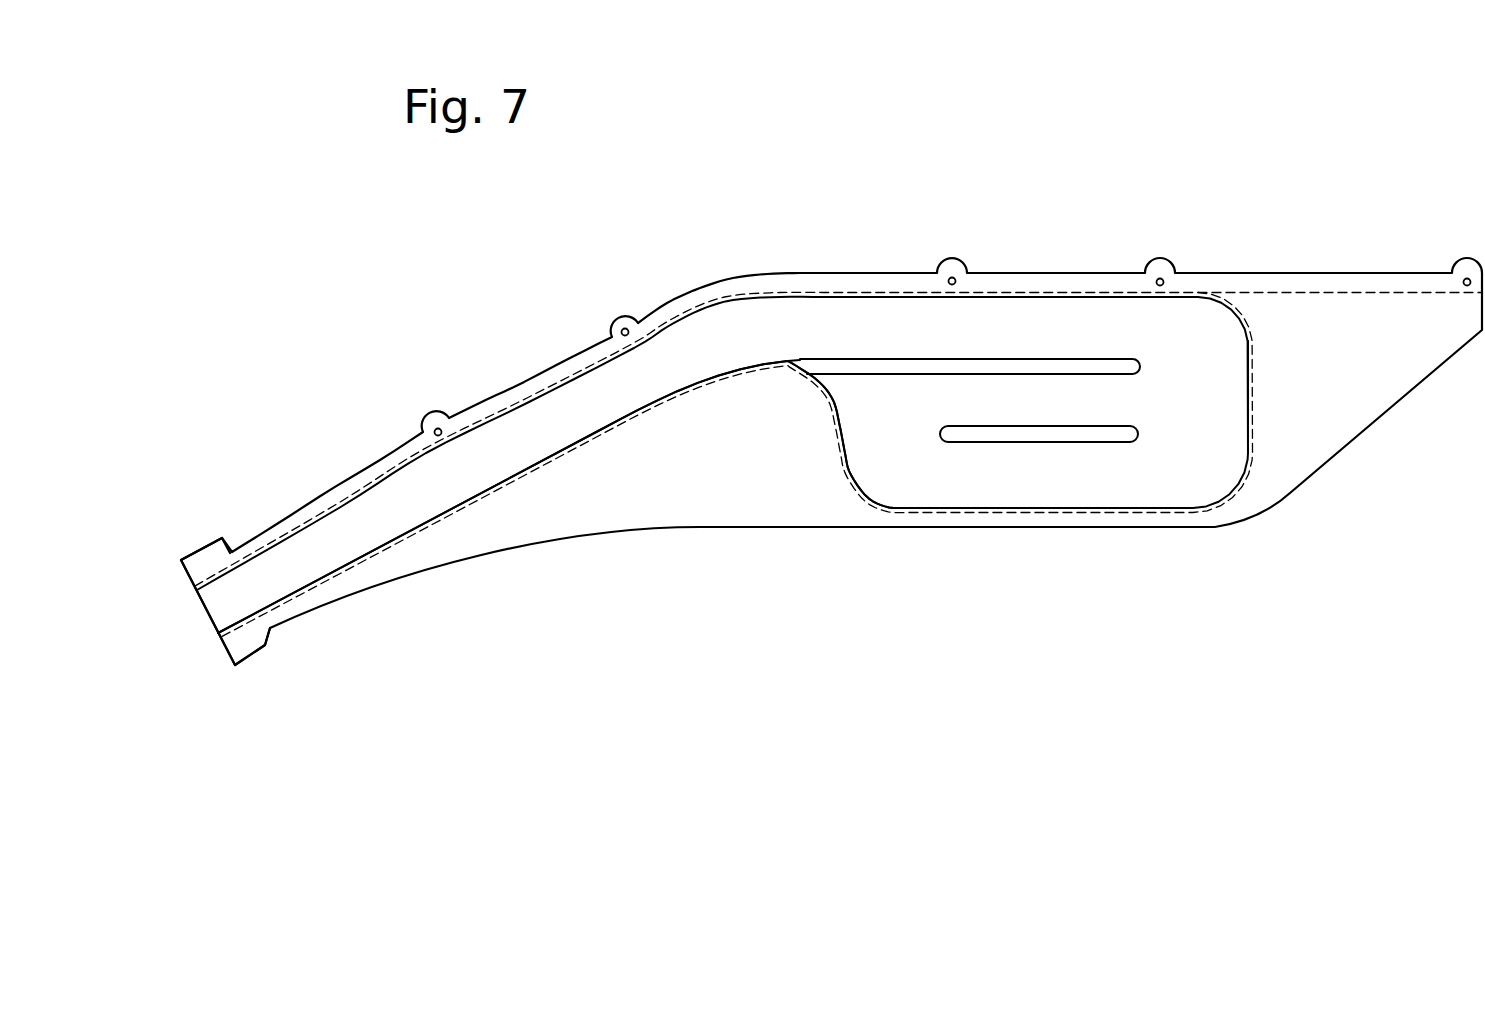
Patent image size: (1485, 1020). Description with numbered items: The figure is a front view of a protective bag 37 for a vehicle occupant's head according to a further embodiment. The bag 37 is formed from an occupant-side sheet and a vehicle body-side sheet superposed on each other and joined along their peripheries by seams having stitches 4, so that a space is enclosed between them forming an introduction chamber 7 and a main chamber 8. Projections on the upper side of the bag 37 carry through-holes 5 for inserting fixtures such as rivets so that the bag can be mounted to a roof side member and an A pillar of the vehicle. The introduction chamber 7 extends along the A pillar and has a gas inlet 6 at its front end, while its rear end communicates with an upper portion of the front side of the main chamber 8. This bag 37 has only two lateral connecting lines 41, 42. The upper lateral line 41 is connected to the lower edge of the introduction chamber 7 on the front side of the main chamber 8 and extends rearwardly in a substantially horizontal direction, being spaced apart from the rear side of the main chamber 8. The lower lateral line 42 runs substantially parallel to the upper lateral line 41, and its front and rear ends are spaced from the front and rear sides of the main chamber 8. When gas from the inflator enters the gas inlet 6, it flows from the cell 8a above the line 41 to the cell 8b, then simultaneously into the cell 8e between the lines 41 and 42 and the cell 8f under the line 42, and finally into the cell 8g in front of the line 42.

The bag 37 is at (1234, 255).
The stitches 4 is at (462, 512).
The through-holes 5 is at (627, 330).
The gas inlet 6 is at (213, 605).
The introduction chamber 7 is at (570, 430).
The main chamber 8 is at (1195, 478).
The cell 8a is at (1033, 298).
The cell 8b is at (1205, 387).
The cell 8e is at (1010, 395).
The cell 8f is at (1048, 485).
The cell 8g is at (860, 483).
The upper lateral line 41 is at (1053, 358).
The lower lateral line 42 is at (1058, 424).